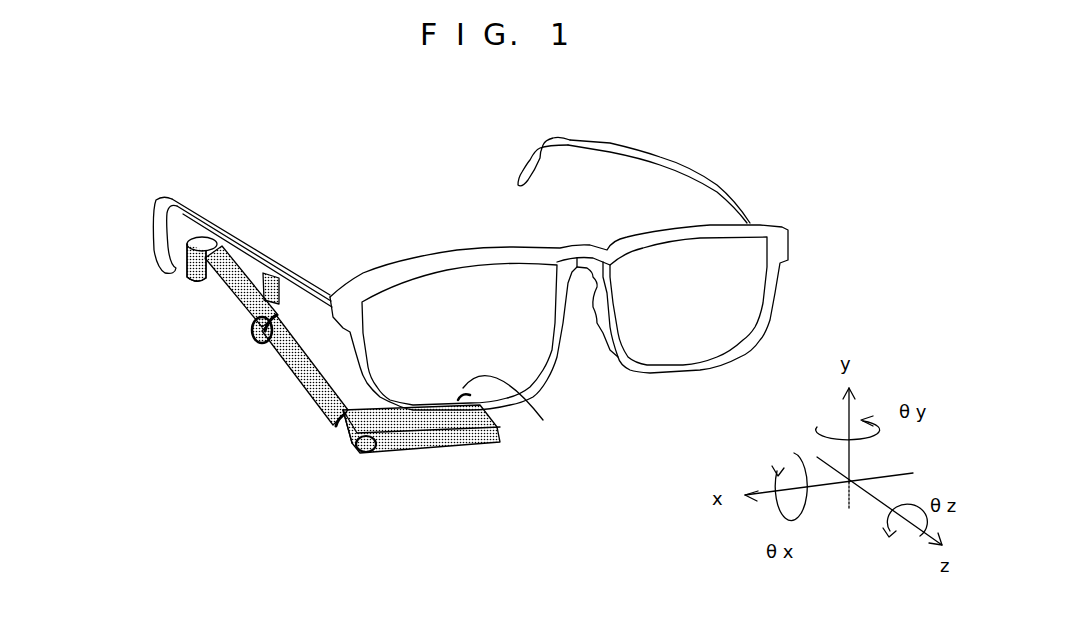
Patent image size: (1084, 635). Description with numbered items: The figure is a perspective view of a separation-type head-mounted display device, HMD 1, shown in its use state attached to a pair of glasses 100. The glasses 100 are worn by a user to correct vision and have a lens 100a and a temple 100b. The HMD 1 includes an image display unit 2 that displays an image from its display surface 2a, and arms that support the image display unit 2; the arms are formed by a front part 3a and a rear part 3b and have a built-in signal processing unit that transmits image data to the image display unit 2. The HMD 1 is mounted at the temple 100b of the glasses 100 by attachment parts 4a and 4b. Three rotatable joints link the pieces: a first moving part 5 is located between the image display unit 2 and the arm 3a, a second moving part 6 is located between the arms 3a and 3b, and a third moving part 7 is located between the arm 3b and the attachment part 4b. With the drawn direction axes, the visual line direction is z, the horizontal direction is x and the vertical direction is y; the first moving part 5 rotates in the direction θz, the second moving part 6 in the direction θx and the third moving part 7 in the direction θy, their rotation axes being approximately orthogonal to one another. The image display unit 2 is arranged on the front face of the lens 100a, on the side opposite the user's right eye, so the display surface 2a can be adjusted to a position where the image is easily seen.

The head-mounted display device 1 is at (310, 364).
The image display unit 2 is at (433, 436).
The display surface 2a is at (516, 414).
The front part of arm 3a is at (297, 383).
The rear part of arm 3b is at (230, 290).
The attachment part 4a is at (277, 287).
The attachment part 4b is at (208, 240).
The first moving part 5 is at (343, 433).
The second moving part 6 is at (253, 333).
The third moving part 7 is at (172, 265).
The glasses 100 is at (493, 270).
The lens 100a is at (437, 297).
The temple 100b is at (250, 262).